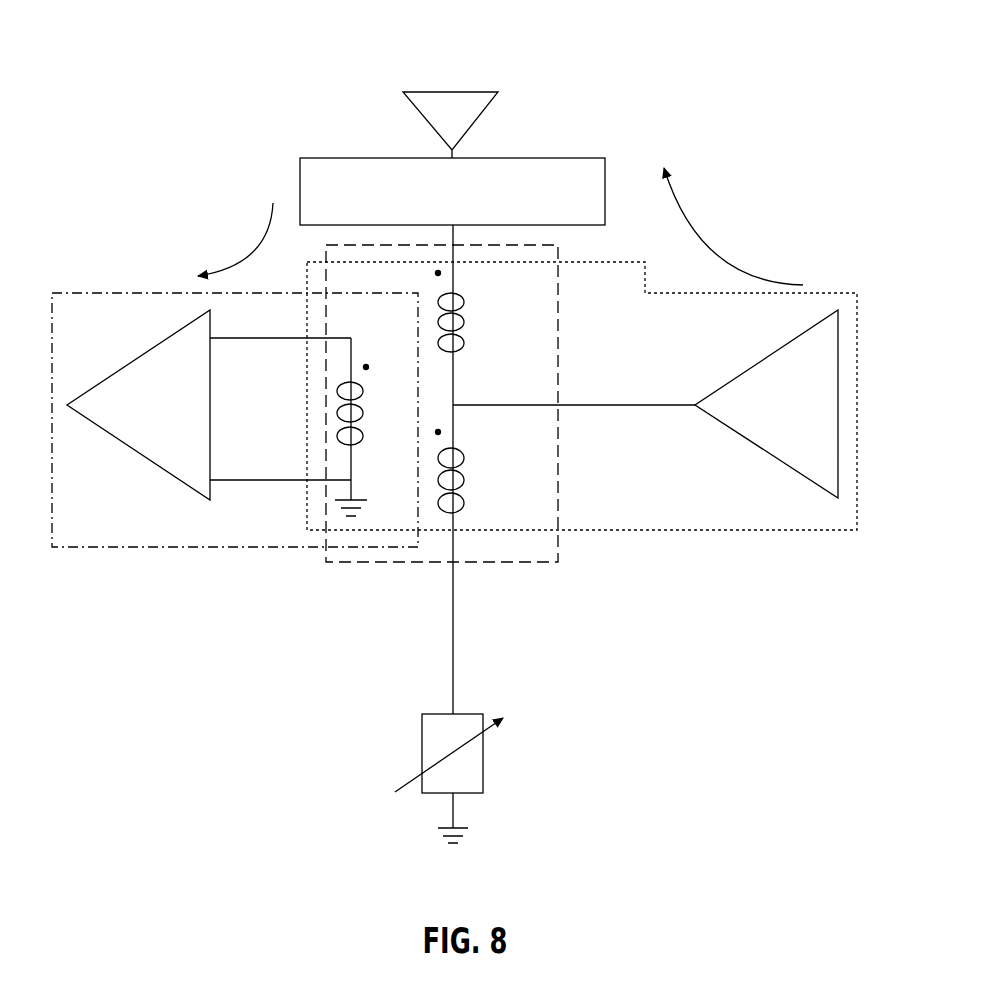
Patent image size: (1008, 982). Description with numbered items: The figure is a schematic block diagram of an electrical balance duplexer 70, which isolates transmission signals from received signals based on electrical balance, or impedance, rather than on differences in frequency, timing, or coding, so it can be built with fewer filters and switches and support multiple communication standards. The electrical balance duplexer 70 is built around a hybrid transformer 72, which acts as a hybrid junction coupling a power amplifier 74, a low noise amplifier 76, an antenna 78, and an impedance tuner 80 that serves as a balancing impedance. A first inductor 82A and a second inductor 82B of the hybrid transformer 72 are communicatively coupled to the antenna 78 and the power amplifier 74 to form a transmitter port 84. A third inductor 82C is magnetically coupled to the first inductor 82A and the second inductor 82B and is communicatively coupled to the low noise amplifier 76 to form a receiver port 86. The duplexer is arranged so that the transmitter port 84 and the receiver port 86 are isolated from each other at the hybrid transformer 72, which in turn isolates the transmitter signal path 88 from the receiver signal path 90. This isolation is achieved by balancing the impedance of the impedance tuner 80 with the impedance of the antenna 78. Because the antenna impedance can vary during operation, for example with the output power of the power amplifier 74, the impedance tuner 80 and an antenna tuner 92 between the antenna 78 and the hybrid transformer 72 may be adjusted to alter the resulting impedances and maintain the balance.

The electrical balance duplexer 70 is at (808, 32).
The hybrid transformer 72 is at (560, 365).
The power amplifier 74 is at (768, 357).
The low noise amplifier 76 is at (140, 357).
The antenna 78 is at (450, 92).
The impedance tuner 80 is at (420, 758).
The first inductor 82A is at (465, 320).
The second inductor 82B is at (465, 480).
The third inductor 82C is at (335, 425).
The transmitter port 84 is at (716, 531).
The receiver port 86 is at (165, 548).
The transmitter signal path 88 is at (689, 237).
The receiver signal path 90 is at (255, 255).
The antenna tuner 92 is at (555, 158).